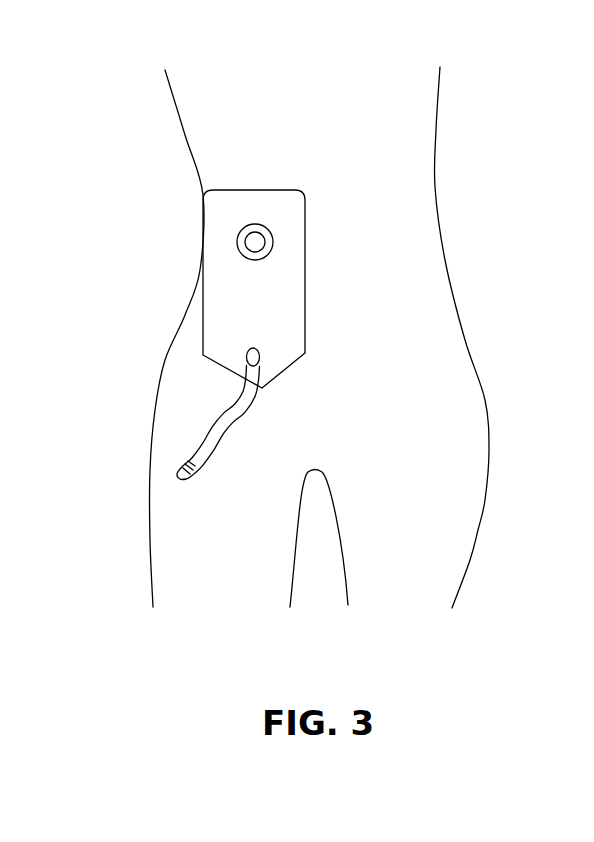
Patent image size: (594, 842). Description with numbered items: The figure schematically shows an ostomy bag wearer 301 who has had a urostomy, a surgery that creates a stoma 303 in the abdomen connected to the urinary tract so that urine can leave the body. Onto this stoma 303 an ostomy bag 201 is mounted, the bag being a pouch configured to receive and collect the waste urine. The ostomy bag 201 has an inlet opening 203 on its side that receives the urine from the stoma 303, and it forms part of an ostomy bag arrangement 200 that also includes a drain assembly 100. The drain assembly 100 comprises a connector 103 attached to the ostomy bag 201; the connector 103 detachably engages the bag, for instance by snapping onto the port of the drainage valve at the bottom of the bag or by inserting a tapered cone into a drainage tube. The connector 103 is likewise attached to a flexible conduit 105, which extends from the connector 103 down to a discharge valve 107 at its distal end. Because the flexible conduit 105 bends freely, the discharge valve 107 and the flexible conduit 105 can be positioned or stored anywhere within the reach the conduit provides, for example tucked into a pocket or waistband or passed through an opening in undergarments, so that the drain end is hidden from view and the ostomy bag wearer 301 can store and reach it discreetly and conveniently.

The drain assembly 100 is at (232, 392).
The connector 103 is at (247, 362).
The flexible conduit 105 is at (217, 417).
The discharge valve 107 is at (173, 468).
The ostomy bag arrangement 200 is at (312, 258).
The ostomy bag 201 is at (230, 297).
The inlet opening 203 is at (252, 224).
The ostomy bag wearer 301 is at (397, 213).
The stoma 303 is at (245, 241).